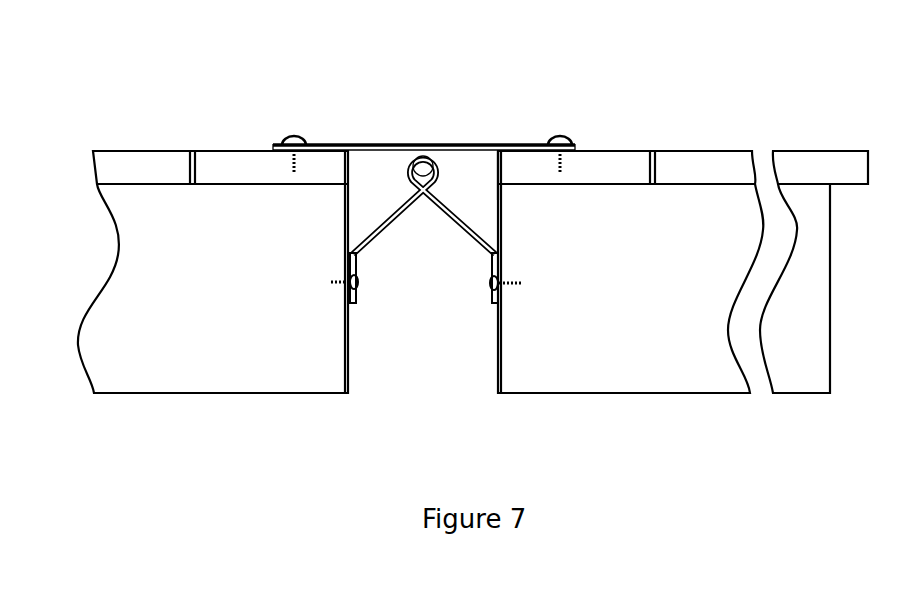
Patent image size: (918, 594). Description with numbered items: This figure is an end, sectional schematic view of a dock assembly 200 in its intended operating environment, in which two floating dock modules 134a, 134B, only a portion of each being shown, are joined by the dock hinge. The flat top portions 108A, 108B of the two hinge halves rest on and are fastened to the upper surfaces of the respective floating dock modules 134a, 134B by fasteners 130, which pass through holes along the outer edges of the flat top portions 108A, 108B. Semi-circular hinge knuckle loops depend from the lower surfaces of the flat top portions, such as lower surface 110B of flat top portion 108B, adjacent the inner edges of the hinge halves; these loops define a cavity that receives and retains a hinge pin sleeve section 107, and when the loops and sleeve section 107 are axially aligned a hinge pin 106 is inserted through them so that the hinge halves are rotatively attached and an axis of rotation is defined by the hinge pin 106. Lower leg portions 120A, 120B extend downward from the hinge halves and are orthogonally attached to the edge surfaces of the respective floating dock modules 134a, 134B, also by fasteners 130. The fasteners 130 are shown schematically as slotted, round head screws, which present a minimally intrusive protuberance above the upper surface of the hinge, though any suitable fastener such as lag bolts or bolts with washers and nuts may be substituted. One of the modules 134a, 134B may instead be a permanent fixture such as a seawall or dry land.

The dock assembly 200 is at (663, 101).
The floating dock module 134a is at (205, 356).
The floating dock module 134B is at (650, 337).
The flat top portion 108A is at (347, 144).
The flat top portion 108B is at (518, 147).
The lower surface 110B is at (468, 161).
The hinge pin 106 is at (430, 153).
The hinge pin sleeve section 107 is at (414, 152).
The lower leg portion 120A is at (345, 268).
The lower leg portion 120B is at (502, 256).
The fastener 130 is at (293, 136).